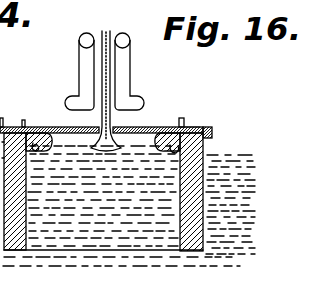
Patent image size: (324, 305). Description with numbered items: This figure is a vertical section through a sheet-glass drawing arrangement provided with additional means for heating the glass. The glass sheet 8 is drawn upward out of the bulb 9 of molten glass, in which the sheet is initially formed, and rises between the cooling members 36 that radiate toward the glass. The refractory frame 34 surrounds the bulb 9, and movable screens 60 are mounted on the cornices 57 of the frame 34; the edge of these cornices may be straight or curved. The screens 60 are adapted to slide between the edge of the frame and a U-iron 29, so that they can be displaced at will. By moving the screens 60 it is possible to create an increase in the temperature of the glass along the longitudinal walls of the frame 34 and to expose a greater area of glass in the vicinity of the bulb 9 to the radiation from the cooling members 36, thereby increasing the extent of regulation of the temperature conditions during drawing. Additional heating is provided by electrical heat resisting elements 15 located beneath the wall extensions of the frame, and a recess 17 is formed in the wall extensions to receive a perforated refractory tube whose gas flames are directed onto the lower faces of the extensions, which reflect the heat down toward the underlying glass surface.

The glass sheet 8 is at (110, 68).
The bulb 9 is at (97, 148).
The electrical heat resisting elements 15 is at (173, 150).
The recess 17 is at (203, 127).
The U-iron 29 is at (190, 125).
The frame 34 is at (196, 167).
The cooling members 36 is at (79, 67).
The cornices 57 is at (186, 125).
The movable screens 60 is at (154, 126).